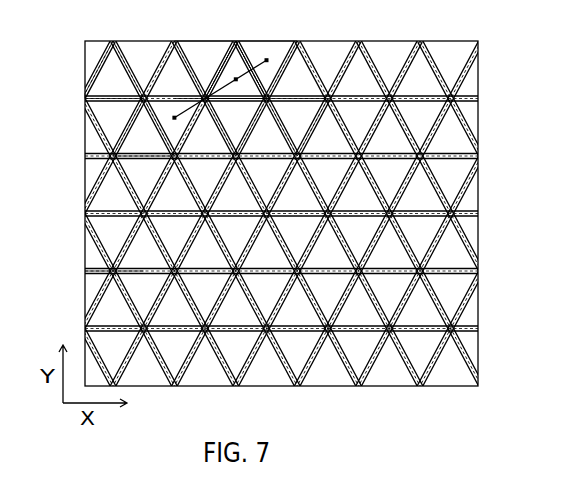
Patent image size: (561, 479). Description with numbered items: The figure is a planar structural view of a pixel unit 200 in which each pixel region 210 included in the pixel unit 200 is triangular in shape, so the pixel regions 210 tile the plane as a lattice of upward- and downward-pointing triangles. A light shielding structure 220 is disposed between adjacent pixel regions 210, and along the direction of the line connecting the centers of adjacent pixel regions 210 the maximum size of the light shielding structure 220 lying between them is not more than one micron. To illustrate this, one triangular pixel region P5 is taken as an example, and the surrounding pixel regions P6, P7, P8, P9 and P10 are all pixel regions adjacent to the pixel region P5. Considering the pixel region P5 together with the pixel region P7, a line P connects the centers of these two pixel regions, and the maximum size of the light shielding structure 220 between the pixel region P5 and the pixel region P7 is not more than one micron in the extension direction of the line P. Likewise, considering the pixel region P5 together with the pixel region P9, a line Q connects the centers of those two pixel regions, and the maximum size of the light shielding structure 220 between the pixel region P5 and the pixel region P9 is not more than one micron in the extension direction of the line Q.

The pixel unit 200 is at (86, 137).
The pixel region 210 is at (112, 70).
The light shielding structure 220 is at (86, 265).
The line connecting centers P is at (260, 61).
The pixel region P5 is at (237, 63).
The pixel region P6 is at (235, 128).
The pixel region P7 is at (277, 58).
The pixel region P8 is at (204, 70).
The pixel region P9 is at (163, 112).
The pixel region P10 is at (297, 128).
The line connecting centers Q is at (183, 98).